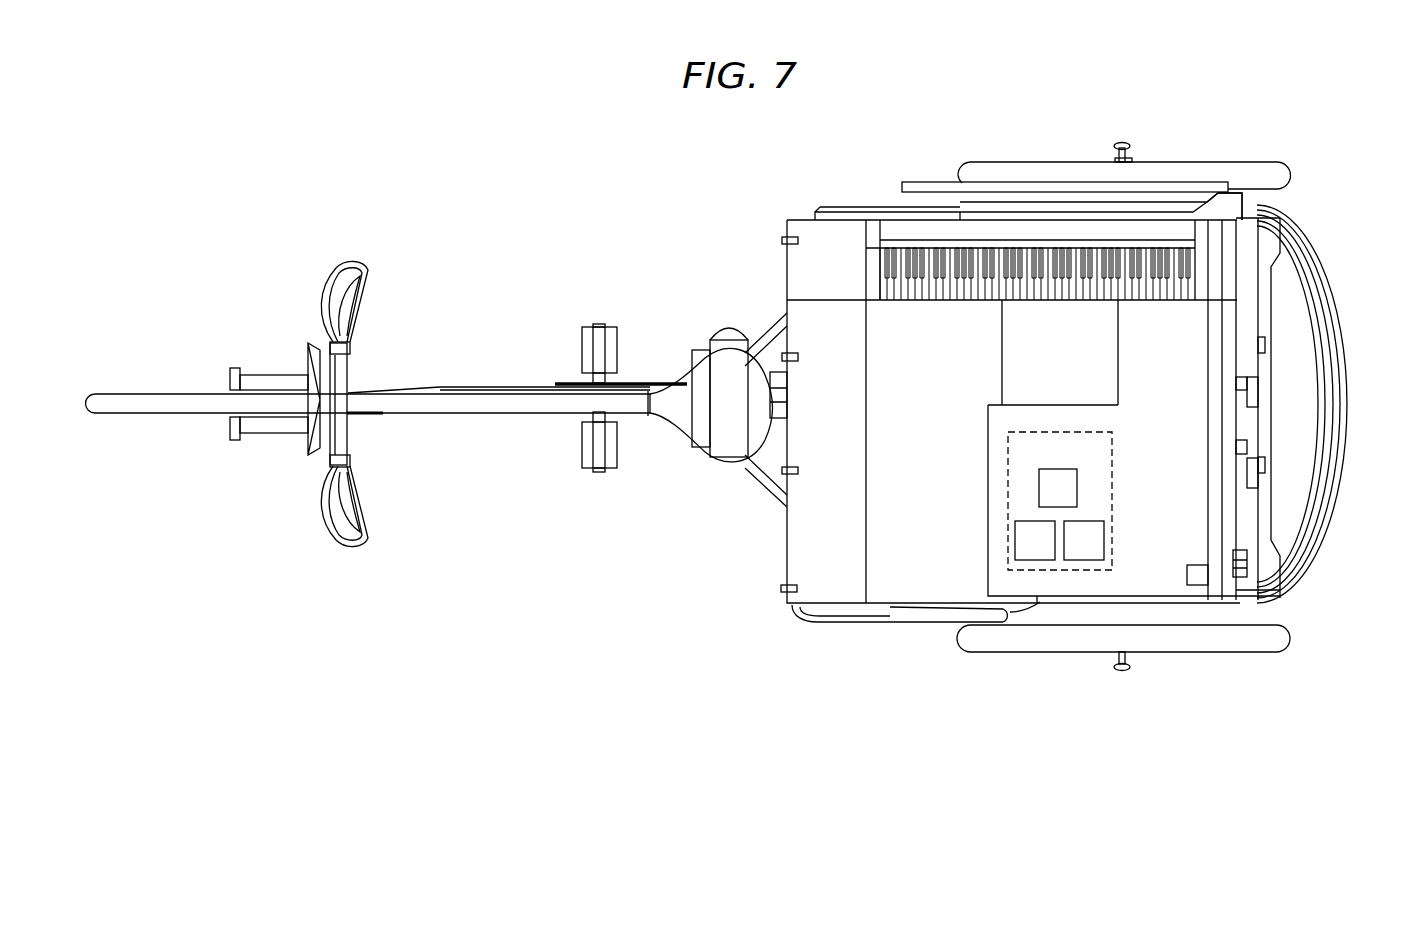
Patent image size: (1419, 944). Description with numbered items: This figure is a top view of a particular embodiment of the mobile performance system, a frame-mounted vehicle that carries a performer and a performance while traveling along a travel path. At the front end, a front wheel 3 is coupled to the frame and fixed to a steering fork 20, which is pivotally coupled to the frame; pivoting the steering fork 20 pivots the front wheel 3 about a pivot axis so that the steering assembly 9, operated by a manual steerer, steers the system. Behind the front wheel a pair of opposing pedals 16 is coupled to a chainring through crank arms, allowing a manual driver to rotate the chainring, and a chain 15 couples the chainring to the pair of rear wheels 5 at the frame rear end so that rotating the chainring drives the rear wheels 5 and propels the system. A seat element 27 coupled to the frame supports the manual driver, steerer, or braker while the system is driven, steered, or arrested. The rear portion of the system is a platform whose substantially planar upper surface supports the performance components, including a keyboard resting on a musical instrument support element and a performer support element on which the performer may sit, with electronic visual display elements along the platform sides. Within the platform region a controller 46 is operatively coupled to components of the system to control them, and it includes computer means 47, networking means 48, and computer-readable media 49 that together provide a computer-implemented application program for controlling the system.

The front wheel 3 is at (155, 400).
The steering fork 20 is at (270, 386).
The steering assembly 9 is at (356, 425).
The chain 15 is at (633, 383).
The pedals 16 is at (585, 347).
The seat element 27 is at (703, 398).
The rear wheels 5 is at (1067, 172).
The controller 46 is at (1060, 501).
The computer means 47 is at (1058, 488).
The networking means 48 is at (1035, 540).
The computer-readable media 49 is at (1084, 540).